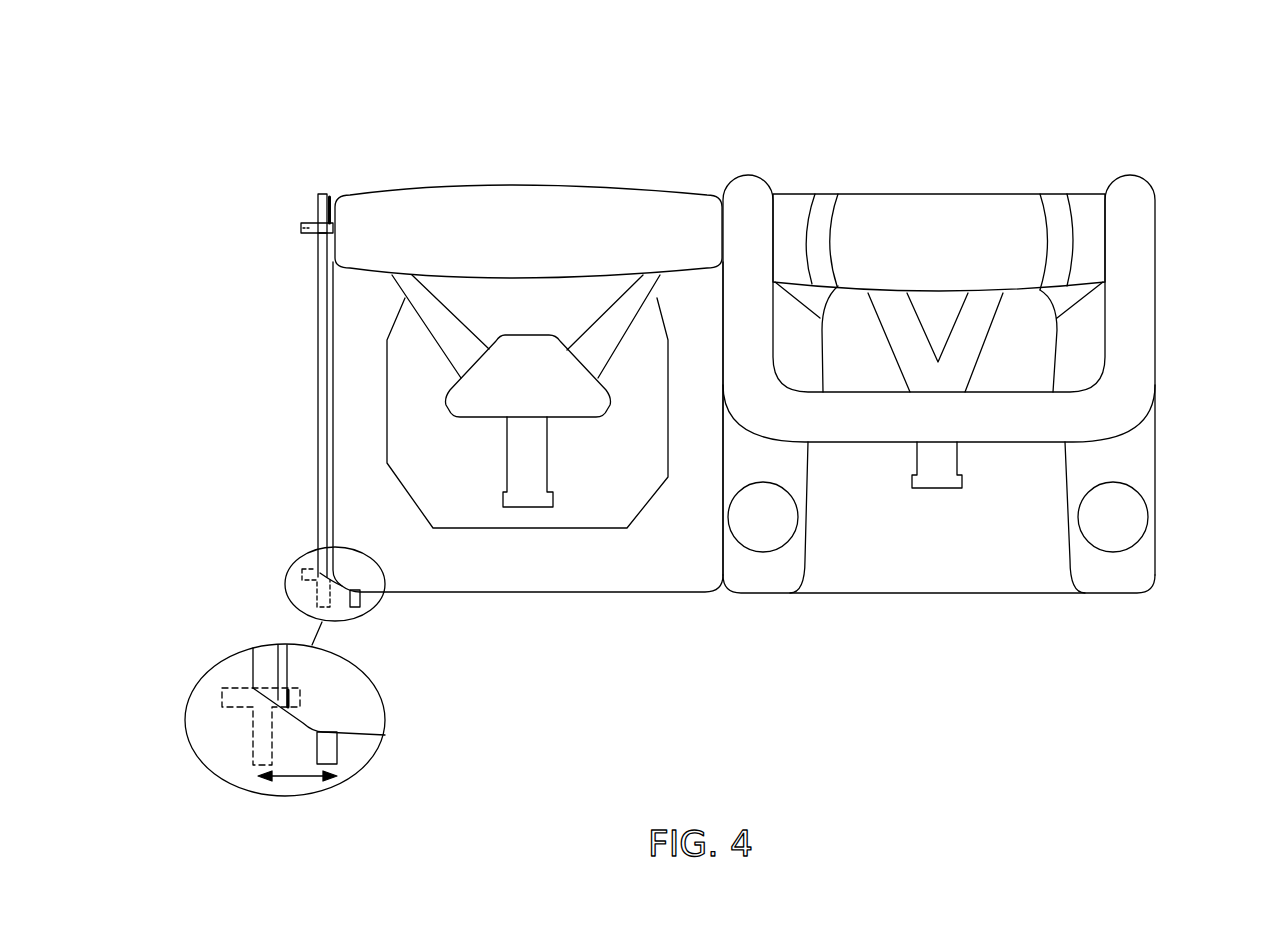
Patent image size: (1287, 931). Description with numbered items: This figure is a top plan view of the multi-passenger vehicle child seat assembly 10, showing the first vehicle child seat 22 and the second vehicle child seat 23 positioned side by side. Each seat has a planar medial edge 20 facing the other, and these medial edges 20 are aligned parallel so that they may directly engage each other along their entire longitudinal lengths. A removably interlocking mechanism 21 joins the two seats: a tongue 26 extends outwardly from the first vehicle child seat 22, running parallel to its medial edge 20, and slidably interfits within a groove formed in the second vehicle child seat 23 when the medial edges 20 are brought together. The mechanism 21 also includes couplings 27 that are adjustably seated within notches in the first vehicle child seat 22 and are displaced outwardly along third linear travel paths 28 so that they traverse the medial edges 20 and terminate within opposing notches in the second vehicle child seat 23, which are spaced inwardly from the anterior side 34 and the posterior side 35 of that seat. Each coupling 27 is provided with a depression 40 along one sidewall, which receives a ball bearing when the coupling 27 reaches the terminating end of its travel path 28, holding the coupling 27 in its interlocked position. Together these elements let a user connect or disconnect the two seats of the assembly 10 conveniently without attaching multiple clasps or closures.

The multi-passenger vehicle child seat assembly 10 is at (1215, 126).
The medial edges 20 is at (353, 191).
The mechanism for removably interlocking 21 is at (310, 214).
The first vehicle child seat 22 is at (527, 606).
The second vehicle child seat 23 is at (1010, 606).
The tongue 26 is at (320, 367).
The couplings 27 is at (325, 193).
The third linear travel paths 28 is at (296, 780).
The anterior side 34 is at (848, 597).
The posterior side 35 is at (877, 193).
The depressions 40 is at (310, 236).